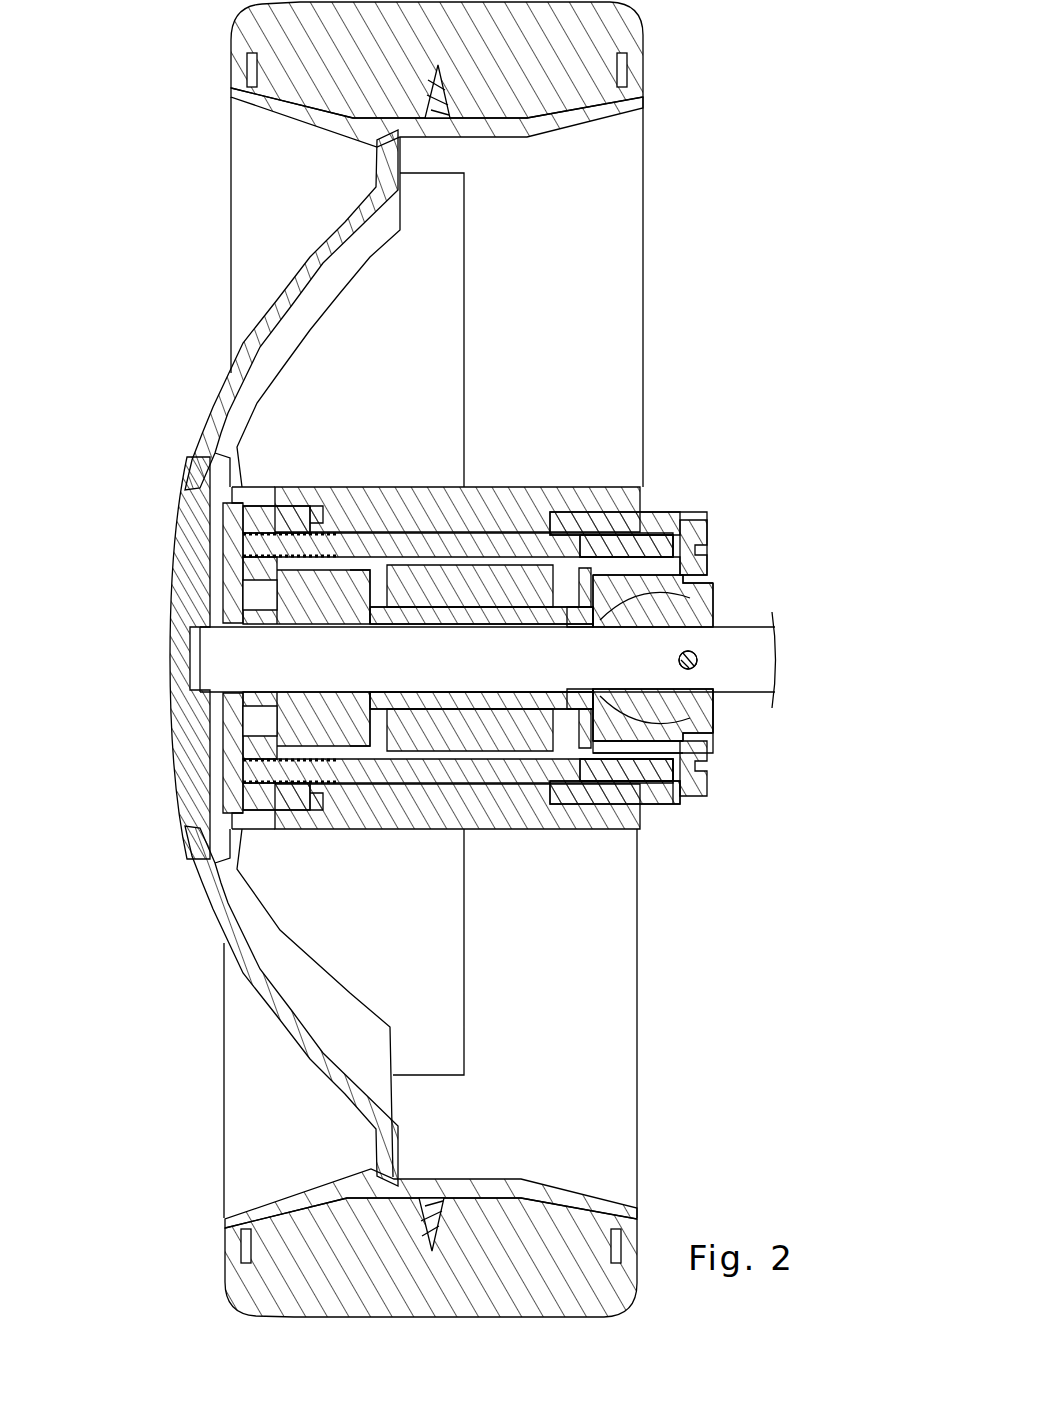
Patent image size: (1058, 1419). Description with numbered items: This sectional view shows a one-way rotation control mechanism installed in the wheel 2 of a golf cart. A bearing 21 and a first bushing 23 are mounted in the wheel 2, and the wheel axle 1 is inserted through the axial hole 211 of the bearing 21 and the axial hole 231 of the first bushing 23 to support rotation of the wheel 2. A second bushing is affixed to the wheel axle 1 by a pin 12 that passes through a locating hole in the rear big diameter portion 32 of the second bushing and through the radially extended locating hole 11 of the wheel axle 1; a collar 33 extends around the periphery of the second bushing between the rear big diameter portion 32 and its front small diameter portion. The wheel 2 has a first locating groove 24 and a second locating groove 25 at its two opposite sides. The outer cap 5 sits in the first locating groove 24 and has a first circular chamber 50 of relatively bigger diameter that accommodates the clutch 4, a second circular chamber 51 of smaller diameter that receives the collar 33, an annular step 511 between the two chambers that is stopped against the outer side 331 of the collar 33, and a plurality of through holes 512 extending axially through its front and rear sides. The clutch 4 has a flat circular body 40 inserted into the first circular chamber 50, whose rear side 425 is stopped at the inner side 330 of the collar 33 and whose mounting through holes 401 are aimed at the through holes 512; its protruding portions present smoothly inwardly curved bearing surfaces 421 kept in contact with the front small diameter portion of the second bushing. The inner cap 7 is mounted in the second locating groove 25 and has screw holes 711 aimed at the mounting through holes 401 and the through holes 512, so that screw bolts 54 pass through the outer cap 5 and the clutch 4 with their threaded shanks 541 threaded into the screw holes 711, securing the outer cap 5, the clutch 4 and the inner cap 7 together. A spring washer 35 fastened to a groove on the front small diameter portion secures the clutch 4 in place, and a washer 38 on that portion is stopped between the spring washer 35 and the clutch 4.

The wheel axle 1 is at (792, 678).
The wheel 2 is at (205, 224).
The clutch 4 is at (607, 745).
The outer cap 5 is at (653, 507).
The inner cap 7 is at (160, 552).
The locating hole 11 is at (698, 660).
The pin 12 is at (695, 652).
The bearing 21 is at (498, 570).
The first bushing 23 is at (340, 580).
The first locating groove 24 is at (648, 600).
The second locating groove 25 is at (215, 452).
The rear big diameter portion 32 is at (715, 722).
The collar 33 is at (663, 830).
The spring washer 35 is at (580, 585).
The washer 38 is at (585, 578).
The flat circular body 40 is at (613, 787).
The first circular chamber 50 is at (605, 795).
The second circular chamber 51 is at (640, 560).
The screw bolts 54 is at (705, 545).
The axial hole 211 is at (470, 620).
The axial hole 231 is at (355, 605).
The inner side 330 is at (648, 760).
The outer side 331 is at (655, 770).
The mounting through holes 401 is at (622, 805).
The bearing surface 421 is at (712, 600).
The rear side 425 is at (705, 585).
The annular step 511 is at (668, 540).
The through holes 512 is at (660, 520).
The threaded shanks 541 is at (262, 545).
The screw holes 711 is at (258, 548).